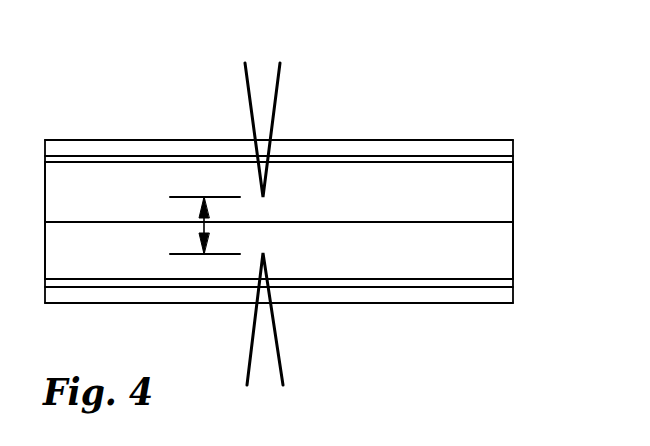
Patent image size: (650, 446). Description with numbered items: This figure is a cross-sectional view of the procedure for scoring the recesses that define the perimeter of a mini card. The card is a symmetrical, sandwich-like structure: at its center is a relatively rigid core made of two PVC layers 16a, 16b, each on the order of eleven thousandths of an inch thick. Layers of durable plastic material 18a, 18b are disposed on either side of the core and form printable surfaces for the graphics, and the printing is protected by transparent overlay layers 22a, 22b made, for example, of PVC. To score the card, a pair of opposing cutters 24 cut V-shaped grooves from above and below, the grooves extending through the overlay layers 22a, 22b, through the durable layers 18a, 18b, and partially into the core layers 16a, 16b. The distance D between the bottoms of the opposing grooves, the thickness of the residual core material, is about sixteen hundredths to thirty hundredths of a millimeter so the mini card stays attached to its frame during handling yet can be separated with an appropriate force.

The cutters 24 is at (247, 90).
The transparent overlay layer 22a is at (364, 147).
The durable plastic layer 18a is at (446, 162).
The PVC core layer 16a is at (507, 202).
The PVC core layer 16b is at (498, 245).
The durable plastic layer 18b is at (472, 279).
The transparent overlay layer 22b is at (373, 295).
The distance between bottoms of opposing grooves D is at (187, 229).